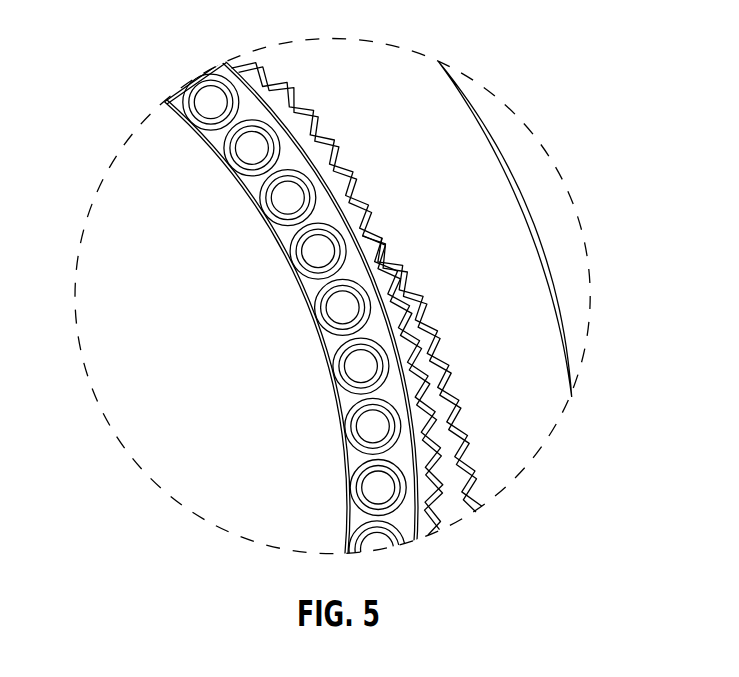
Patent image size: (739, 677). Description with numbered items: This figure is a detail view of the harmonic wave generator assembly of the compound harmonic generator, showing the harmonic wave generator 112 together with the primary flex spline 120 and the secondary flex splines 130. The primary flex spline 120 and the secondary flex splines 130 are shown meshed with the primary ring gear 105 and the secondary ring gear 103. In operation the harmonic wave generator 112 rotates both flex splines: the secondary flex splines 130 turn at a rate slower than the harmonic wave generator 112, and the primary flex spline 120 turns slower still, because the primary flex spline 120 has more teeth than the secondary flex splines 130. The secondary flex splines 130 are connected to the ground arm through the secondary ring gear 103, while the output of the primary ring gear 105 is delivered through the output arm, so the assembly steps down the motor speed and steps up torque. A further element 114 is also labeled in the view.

The secondary ring gear 103 is at (484, 220).
The primary ring gear 105 is at (463, 433).
The harmonic wave generator 112 is at (132, 430).
The conductor bundle 114 is at (322, 342).
The primary flex spline 120 is at (440, 502).
The secondary flex splines 130 is at (417, 302).